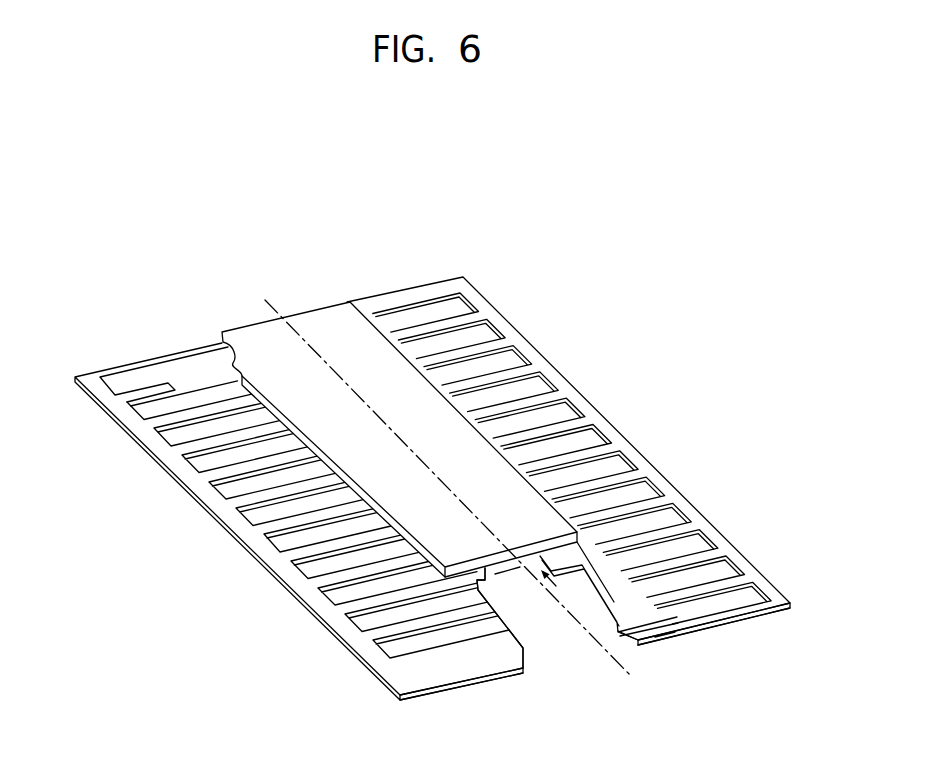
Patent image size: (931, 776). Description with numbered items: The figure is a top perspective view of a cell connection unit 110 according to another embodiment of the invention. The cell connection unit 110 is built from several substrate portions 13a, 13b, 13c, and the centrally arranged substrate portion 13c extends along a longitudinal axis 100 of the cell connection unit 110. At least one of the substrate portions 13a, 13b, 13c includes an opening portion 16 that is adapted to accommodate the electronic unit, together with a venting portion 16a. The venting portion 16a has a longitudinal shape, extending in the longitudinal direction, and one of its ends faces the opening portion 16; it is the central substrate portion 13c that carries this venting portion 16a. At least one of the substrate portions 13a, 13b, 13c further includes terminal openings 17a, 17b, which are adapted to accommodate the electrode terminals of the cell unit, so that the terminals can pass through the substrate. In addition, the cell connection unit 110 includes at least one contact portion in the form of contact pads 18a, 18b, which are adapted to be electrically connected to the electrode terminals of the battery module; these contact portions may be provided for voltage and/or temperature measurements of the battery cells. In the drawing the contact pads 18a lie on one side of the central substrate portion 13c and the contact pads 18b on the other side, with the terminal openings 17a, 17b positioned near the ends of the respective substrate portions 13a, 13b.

The longitudinal axis 100 is at (315, 350).
The cell connection unit 110 is at (706, 386).
The contact pad 18a is at (503, 327).
The contact pad 18b is at (208, 417).
The terminal opening 17a is at (737, 603).
The terminal opening 17b is at (443, 672).
The substrate portion 13a is at (667, 637).
The substrate portion 13b is at (524, 652).
The substrate portion 13c is at (507, 572).
The opening portion 16 is at (580, 602).
The venting portion 16a is at (552, 580).